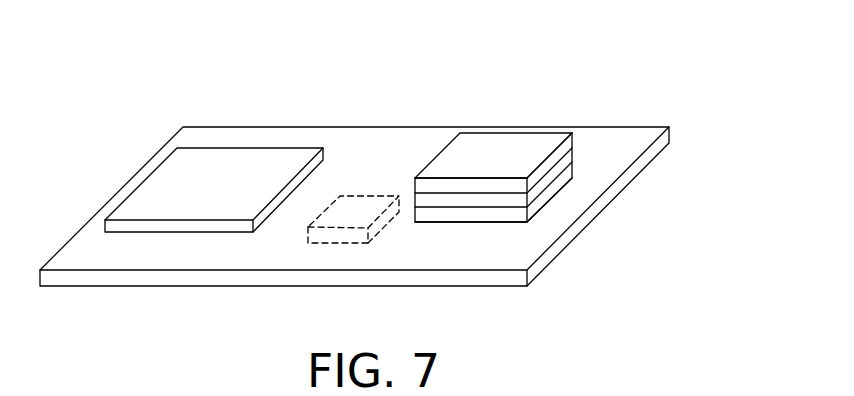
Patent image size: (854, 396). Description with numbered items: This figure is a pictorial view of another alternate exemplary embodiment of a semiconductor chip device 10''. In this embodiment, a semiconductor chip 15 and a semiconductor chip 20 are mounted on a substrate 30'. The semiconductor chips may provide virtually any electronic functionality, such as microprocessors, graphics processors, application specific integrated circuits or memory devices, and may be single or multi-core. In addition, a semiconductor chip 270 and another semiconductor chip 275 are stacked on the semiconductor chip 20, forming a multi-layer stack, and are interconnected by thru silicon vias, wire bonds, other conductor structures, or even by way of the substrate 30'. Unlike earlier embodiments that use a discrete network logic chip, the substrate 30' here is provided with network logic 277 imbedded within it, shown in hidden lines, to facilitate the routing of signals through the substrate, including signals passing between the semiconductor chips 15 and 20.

The semiconductor chip device 10'' is at (380, 170).
The substrate 30' is at (364, 170).
The semiconductor chip 15 is at (258, 168).
The network logic 277 is at (370, 195).
The semiconductor chip 275 is at (487, 150).
The semiconductor chip 270 is at (568, 171).
The semiconductor chip 20 is at (537, 213).